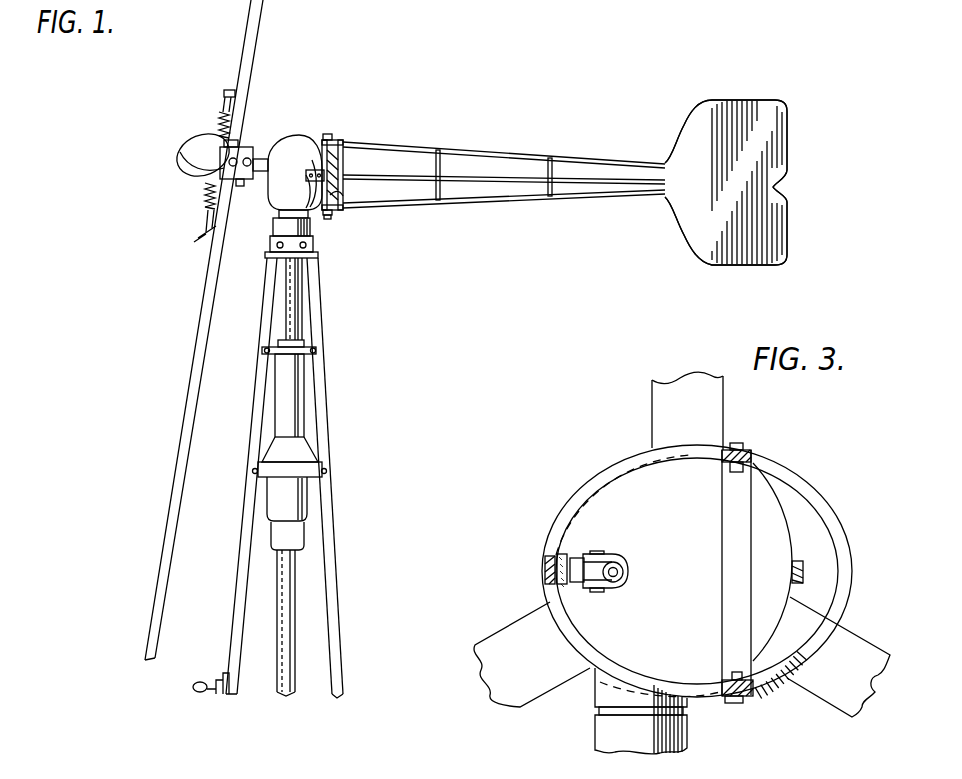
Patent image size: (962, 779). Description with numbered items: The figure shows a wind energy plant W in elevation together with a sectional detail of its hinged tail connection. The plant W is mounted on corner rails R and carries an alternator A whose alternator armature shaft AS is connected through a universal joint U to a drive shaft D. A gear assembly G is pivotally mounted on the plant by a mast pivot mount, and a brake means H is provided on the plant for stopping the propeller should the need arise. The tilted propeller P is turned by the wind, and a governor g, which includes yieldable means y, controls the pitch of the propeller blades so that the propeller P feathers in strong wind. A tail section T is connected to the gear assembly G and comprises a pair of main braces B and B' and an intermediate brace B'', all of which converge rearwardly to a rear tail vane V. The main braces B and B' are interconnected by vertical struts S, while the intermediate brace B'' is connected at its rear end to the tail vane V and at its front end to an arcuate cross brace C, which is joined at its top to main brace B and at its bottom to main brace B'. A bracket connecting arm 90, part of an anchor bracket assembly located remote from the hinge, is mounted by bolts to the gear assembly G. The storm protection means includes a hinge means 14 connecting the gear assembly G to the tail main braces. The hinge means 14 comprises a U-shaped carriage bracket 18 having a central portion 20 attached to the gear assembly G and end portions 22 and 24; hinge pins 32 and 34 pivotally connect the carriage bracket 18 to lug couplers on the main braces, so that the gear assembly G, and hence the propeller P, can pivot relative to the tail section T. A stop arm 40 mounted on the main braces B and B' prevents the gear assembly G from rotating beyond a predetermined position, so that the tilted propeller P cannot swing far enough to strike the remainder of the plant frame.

In FIG. 1, the propeller P is at (125, 249).
In FIG. 3, the propeller P is at (508, 600).
In FIG. 1, the governor g is at (250, 135).
In FIG. 1, the yieldable means y is at (211, 105).
In FIG. 1, the gear assembly G is at (312, 115).
In FIG. 3, the gear assembly G is at (790, 486).
In FIG. 1, the bracket connecting arm 90 is at (312, 170).
In FIG. 1, the hinge means 14 is at (338, 128).
In FIG. 1, the arcuate cross brace C is at (343, 148).
In FIG. 3, the arcuate cross brace C is at (637, 450).
In FIG. 1, the hinge pin 34 is at (327, 214).
In FIG. 3, the hinge pin 34 is at (737, 703).
In FIG. 1, the stop arm 40 is at (343, 196).
In FIG. 3, the stop arm 40 is at (848, 510).
In FIG. 1, the main brace B is at (504, 140).
In FIG. 3, the main brace B is at (758, 555).
In FIG. 1, the intermediate brace B'' is at (504, 212).
In FIG. 3, the intermediate brace B'' is at (571, 547).
In FIG. 1, the main brace B' is at (504, 220).
In FIG. 3, the main brace B' is at (691, 711).
In FIG. 1, the vertical struts S is at (553, 192).
In FIG. 1, the tail section T is at (650, 138).
In FIG. 1, the tail vane V is at (690, 238).
In FIG. 1, the wind energy plant W is at (541, 74).
In FIG. 1, the corner rails R is at (335, 612).
In FIG. 1, the drive shaft D is at (292, 317).
In FIG. 1, the universal joint U is at (283, 345).
In FIG. 1, the alternator armature shaft AS is at (288, 403).
In FIG. 1, the alternator A is at (290, 508).
In FIG. 1, the brake means H is at (188, 695).
In FIG. 3, the end portion 22 is at (722, 468).
In FIG. 3, the hinge pin 32 is at (734, 443).
In FIG. 3, the carriage bracket 18 is at (724, 552).
In FIG. 3, the central portion 20 is at (737, 612).
In FIG. 3, the end portion 24 is at (730, 677).